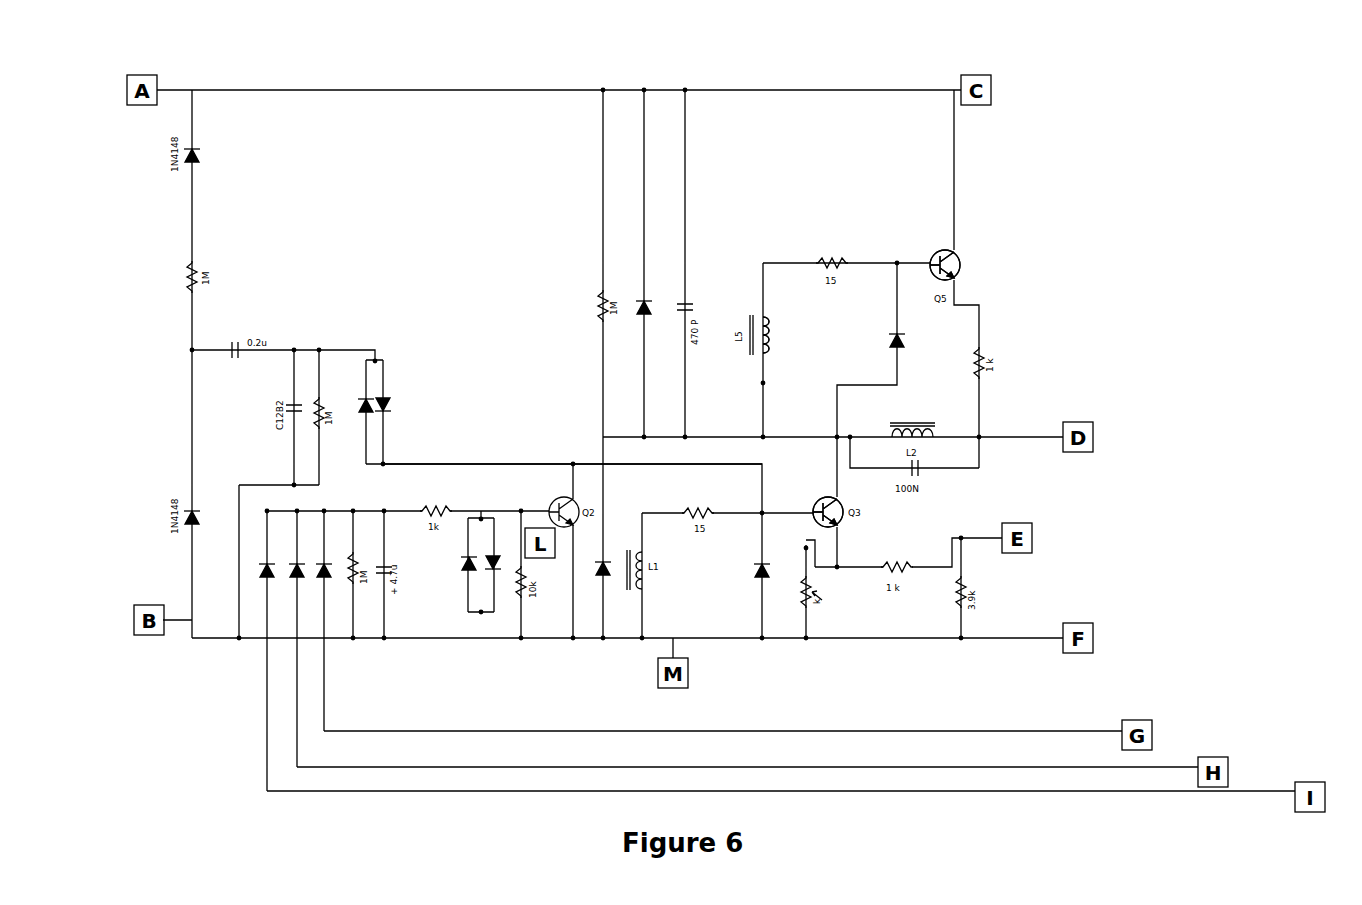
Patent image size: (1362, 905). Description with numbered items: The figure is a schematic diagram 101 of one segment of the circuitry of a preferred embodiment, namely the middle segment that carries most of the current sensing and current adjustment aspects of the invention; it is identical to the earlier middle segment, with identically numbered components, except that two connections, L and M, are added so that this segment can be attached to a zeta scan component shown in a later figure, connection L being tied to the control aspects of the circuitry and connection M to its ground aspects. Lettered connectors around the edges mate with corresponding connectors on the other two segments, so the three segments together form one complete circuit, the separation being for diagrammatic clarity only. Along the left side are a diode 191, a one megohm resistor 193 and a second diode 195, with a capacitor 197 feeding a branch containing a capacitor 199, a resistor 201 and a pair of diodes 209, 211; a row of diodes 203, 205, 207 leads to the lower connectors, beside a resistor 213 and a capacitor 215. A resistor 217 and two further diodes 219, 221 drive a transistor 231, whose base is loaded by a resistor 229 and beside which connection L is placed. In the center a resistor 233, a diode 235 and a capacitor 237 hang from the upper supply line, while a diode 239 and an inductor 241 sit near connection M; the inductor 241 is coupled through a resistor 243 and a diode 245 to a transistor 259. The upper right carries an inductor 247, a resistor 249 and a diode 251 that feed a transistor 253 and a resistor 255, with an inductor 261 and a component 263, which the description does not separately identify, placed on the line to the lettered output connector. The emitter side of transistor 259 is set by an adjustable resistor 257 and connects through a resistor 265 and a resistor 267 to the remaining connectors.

The schematic diagram 101 is at (638, 74).
The diode 191 is at (200, 170).
The resistor 193 is at (196, 258).
The diode 195 is at (196, 497).
The capacitor 197 is at (224, 345).
The capacitor 199 is at (290, 393).
The resistor 201 is at (324, 390).
The diode 203 is at (263, 590).
The diode 205 is at (297, 590).
The diode 207 is at (322, 590).
The diode 209 is at (370, 392).
The diode 211 is at (382, 427).
The resistor 213 is at (357, 600).
The capacitor 215 is at (388, 600).
The resistor 217 is at (448, 505).
The diode 219 is at (465, 588).
The diode 221 is at (488, 593).
The resistor 229 is at (525, 607).
The transistor 231 is at (568, 497).
The resistor 233 is at (598, 305).
The diode 235 is at (655, 290).
The capacitor 237 is at (690, 295).
The diode 239 is at (604, 550).
The inductor 241 is at (643, 590).
The resistor 243 is at (700, 512).
The diode 245 is at (757, 552).
The inductor 247 is at (790, 338).
The resistor 249 is at (840, 262).
The diode 251 is at (890, 360).
The transistor 253 is at (960, 242).
The resistor 255 is at (985, 345).
The resistor 257 is at (822, 600).
The transistor 259 is at (820, 507).
The inductor 261 is at (915, 428).
The capacitor 263 is at (930, 472).
The resistor 265 is at (898, 562).
The resistor 267 is at (1012, 593).